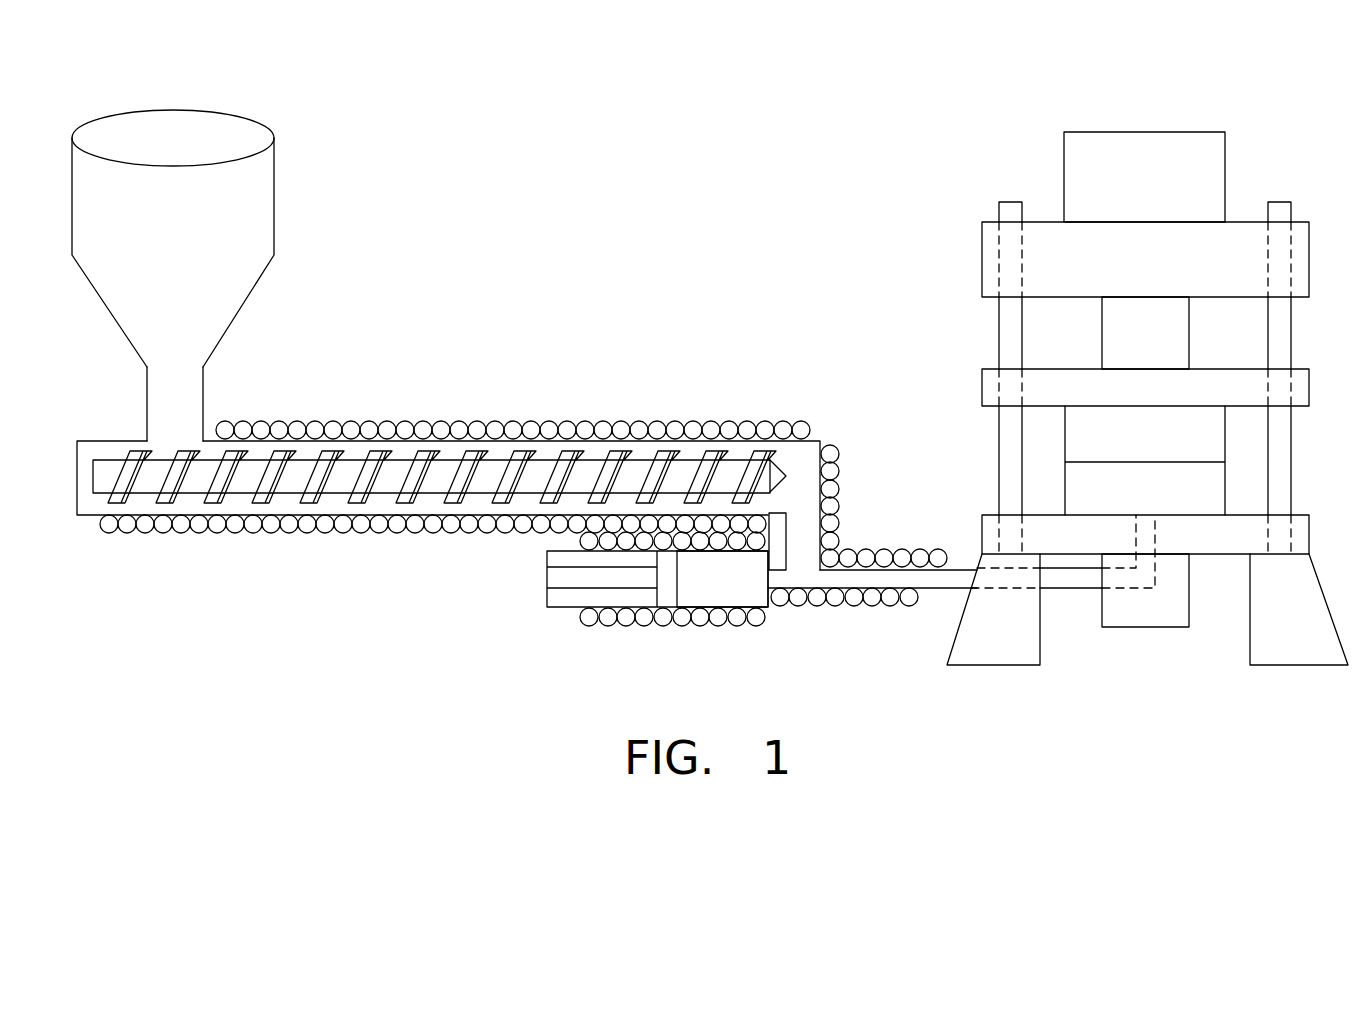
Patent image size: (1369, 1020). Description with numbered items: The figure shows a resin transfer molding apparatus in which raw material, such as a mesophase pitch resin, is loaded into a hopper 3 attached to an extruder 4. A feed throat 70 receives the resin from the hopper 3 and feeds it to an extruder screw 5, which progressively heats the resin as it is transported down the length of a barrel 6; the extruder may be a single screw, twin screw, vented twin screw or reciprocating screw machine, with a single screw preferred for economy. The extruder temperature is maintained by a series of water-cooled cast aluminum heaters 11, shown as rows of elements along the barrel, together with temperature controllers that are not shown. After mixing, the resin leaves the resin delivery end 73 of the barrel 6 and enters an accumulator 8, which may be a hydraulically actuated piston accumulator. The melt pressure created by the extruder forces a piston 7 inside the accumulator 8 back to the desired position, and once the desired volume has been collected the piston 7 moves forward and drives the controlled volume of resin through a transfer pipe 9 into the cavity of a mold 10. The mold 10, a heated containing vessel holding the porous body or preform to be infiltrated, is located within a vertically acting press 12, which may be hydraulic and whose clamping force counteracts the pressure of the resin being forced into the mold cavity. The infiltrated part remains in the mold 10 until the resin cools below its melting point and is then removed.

The hopper 3 is at (265, 197).
The feed throat 70 is at (176, 441).
The extruder 4 is at (75, 505).
The extruder screw 5 is at (253, 468).
The barrel 6 is at (405, 450).
The water-cooled cast aluminum heaters 11 is at (207, 530).
The resin delivery end 73 is at (797, 472).
The piston 7 is at (665, 590).
The accumulator 8 is at (747, 585).
The transfer pipe 9 is at (807, 550).
The press 12 is at (1162, 271).
The mold 10 is at (1165, 447).